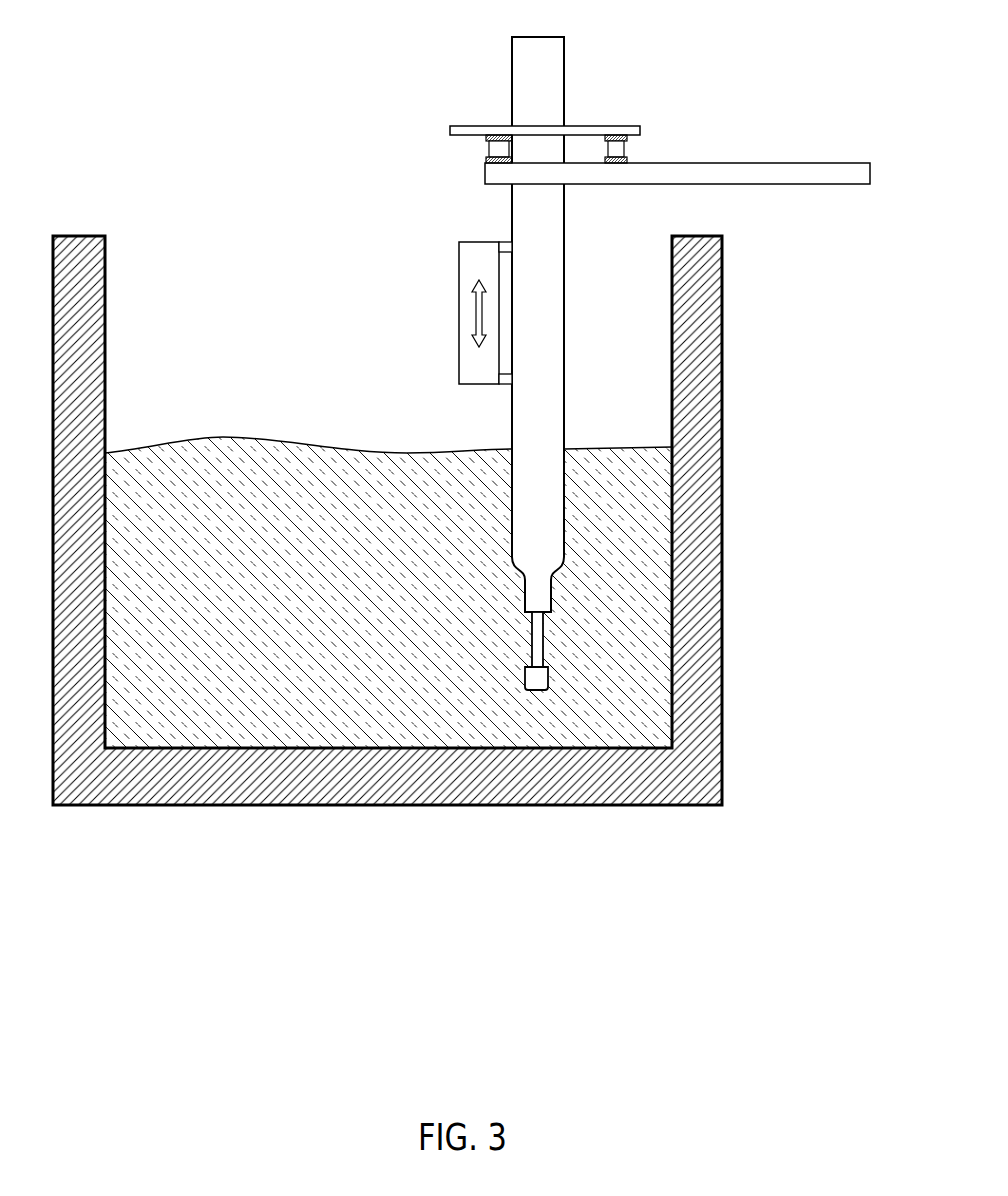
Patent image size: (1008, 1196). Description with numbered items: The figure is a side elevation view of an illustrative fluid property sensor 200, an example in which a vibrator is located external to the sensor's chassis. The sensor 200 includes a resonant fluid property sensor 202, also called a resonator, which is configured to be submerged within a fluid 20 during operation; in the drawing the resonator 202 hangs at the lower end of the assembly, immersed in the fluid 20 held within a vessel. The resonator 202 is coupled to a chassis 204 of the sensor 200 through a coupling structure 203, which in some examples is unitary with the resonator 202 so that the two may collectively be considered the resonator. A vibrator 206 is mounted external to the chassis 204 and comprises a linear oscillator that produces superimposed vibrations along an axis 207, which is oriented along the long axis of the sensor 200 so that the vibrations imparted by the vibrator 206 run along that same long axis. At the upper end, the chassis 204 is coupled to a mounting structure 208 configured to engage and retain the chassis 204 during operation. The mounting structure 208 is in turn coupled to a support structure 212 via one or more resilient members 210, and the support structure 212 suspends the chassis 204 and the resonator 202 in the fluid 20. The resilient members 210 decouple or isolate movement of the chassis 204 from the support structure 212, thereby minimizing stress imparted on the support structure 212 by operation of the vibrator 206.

The fluid 20 is at (158, 460).
The fluid property sensor 200 is at (601, 365).
The resonant fluid property sensor 202 is at (548, 668).
The coupling structure 203 is at (538, 640).
The chassis 204 is at (540, 537).
The vibrator 206 is at (459, 308).
The axis 207 is at (475, 329).
The mounting structure 208 is at (580, 126).
The resilient members 210 is at (486, 147).
The support structure 212 is at (812, 163).